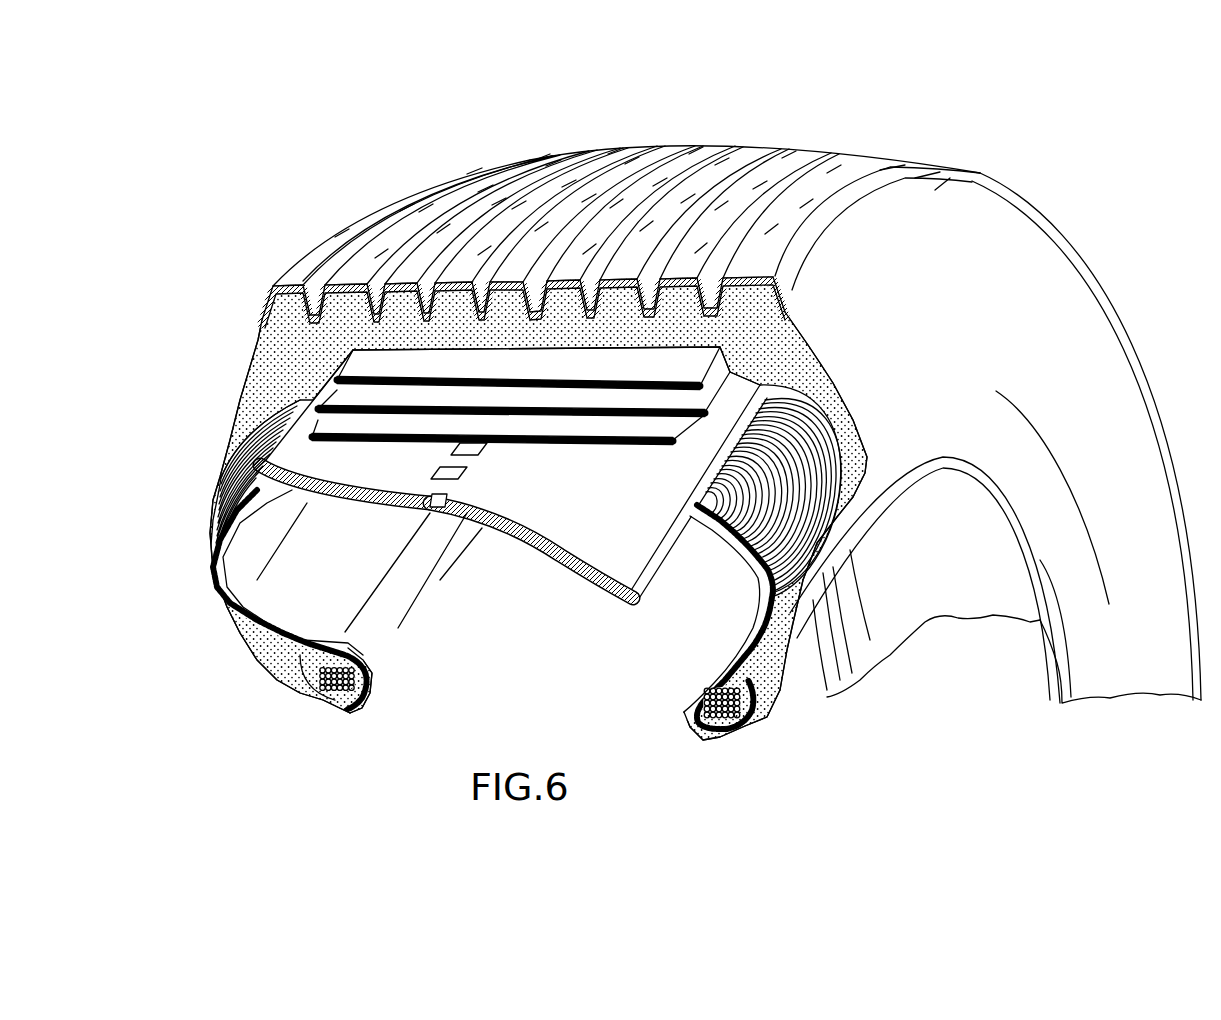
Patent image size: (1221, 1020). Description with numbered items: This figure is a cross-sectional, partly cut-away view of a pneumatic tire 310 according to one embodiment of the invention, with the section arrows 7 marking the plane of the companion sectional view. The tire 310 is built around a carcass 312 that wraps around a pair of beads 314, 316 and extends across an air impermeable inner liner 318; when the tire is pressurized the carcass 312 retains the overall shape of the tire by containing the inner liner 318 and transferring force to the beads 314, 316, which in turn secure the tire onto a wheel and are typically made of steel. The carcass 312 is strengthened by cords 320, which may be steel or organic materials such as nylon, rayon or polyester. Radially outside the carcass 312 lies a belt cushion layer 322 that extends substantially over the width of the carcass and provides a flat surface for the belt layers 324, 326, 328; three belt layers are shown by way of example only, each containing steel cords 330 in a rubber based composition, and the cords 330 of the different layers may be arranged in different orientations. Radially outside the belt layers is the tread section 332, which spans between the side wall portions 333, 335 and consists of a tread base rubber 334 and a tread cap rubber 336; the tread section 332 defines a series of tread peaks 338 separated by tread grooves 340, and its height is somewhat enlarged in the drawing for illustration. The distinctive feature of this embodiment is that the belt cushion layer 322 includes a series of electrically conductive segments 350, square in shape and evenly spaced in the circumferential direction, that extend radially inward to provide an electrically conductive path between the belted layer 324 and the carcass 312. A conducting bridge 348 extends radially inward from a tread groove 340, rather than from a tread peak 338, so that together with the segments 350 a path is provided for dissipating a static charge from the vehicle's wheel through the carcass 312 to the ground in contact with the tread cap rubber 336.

The pneumatic tire 310 is at (1046, 125).
The carcass 312 is at (363, 692).
The bead 314 is at (337, 677).
The bead 316 is at (717, 705).
The inner liner 318 is at (363, 638).
The cords 320 is at (805, 440).
The belt cushion layer 322 is at (610, 572).
The belt layer 324 is at (655, 430).
The belt layer 326 is at (393, 395).
The belt layer 328 is at (633, 365).
The steel cords 330 is at (337, 385).
The tread section 332 is at (232, 312).
The side wall portion 333 is at (225, 427).
The tread base rubber 334 is at (783, 337).
The side wall portion 335 is at (1035, 300).
The tread cap rubber 336 is at (275, 284).
The tread peak 338 is at (758, 312).
The tread groove 340 is at (710, 281).
The conducting bridge 348 is at (476, 318).
The electrically conductive segments 350 is at (458, 473).
The section line 7- 7 is at (230, 330).